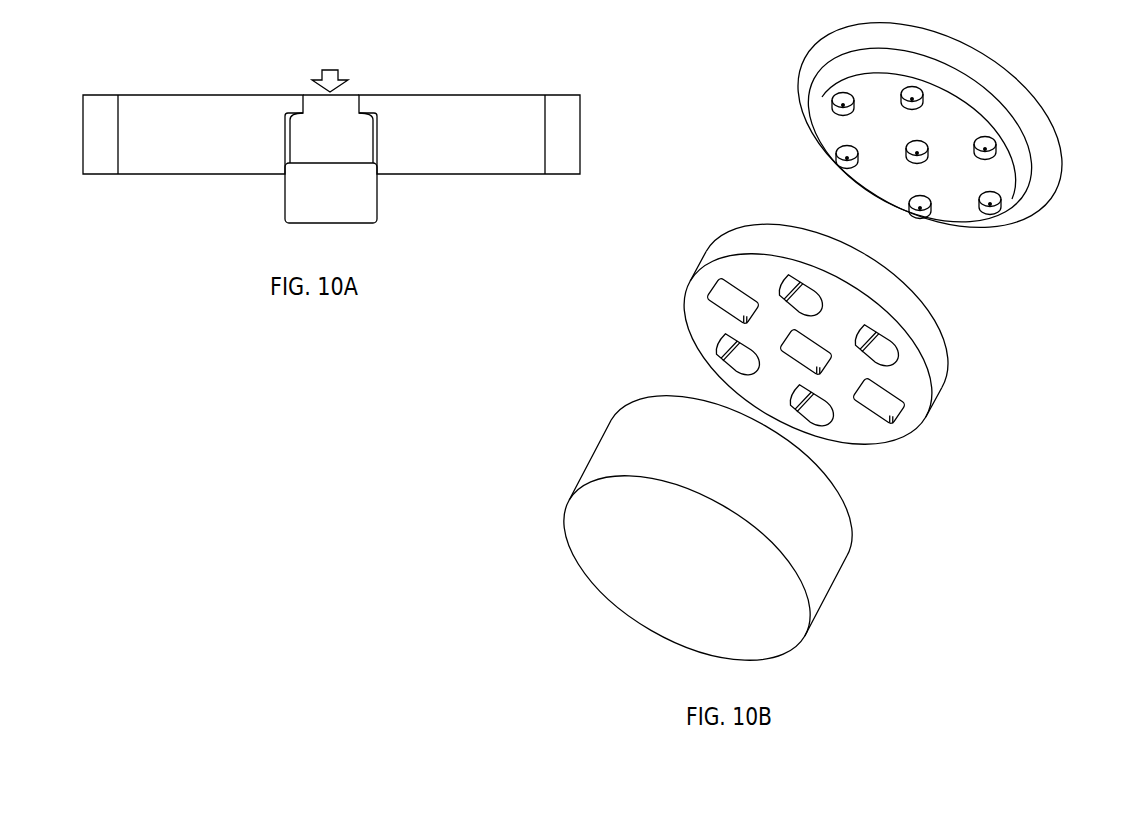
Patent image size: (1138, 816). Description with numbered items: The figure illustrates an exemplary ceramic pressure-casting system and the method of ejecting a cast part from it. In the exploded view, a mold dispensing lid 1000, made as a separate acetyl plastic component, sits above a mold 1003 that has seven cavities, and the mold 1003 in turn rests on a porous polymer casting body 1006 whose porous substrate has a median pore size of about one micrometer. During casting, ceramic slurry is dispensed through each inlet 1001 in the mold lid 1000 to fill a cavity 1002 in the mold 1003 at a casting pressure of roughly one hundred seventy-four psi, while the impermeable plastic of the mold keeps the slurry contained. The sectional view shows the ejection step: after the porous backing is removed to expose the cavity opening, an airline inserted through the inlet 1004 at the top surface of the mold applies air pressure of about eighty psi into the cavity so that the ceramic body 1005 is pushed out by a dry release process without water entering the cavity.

In FIG. 10B, the mold dispensing lid 1000 is at (1033, 171).
In FIG. 10B, the inlet 1001 is at (841, 105).
In FIG. 10B, the cavity 1002 is at (727, 345).
In FIG. 10A, the mold 1003 is at (225, 97).
In FIG. 10B, the mold 1003 is at (927, 372).
In FIG. 10A, the inlet 1004 is at (357, 92).
In FIG. 10A, the ceramic body 1005 is at (375, 197).
In FIG. 10B, the ceramic body 1005 is at (893, 410).
In FIG. 10B, the porous polymer casting body 1006 is at (830, 580).